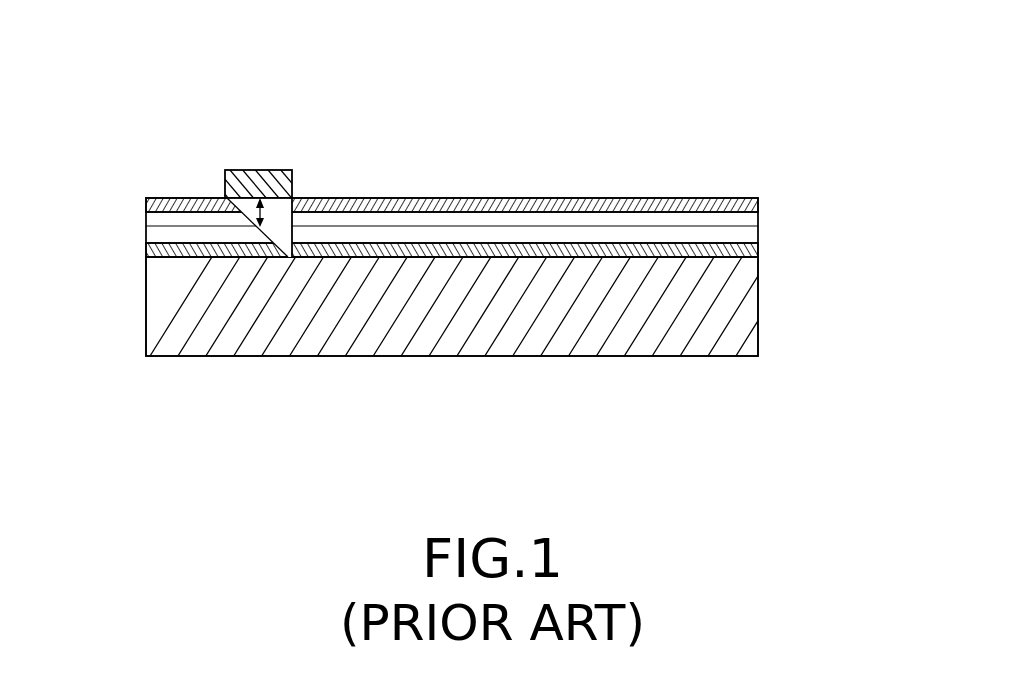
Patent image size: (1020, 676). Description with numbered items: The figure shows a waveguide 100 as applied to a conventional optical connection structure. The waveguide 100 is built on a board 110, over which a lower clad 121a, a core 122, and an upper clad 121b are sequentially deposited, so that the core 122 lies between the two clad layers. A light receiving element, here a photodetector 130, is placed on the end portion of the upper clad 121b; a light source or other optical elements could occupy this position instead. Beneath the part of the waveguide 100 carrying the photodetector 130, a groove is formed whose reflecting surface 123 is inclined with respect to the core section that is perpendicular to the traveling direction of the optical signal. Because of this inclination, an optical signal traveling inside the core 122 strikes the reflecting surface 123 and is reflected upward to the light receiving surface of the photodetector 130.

The waveguide 100 is at (471, 48).
The board 110 is at (753, 308).
The lower clad 121a is at (759, 246).
The upper clad 121b is at (759, 198).
The core 122 is at (759, 220).
The reflecting surface 123 is at (256, 227).
The photodetector 130 is at (279, 149).